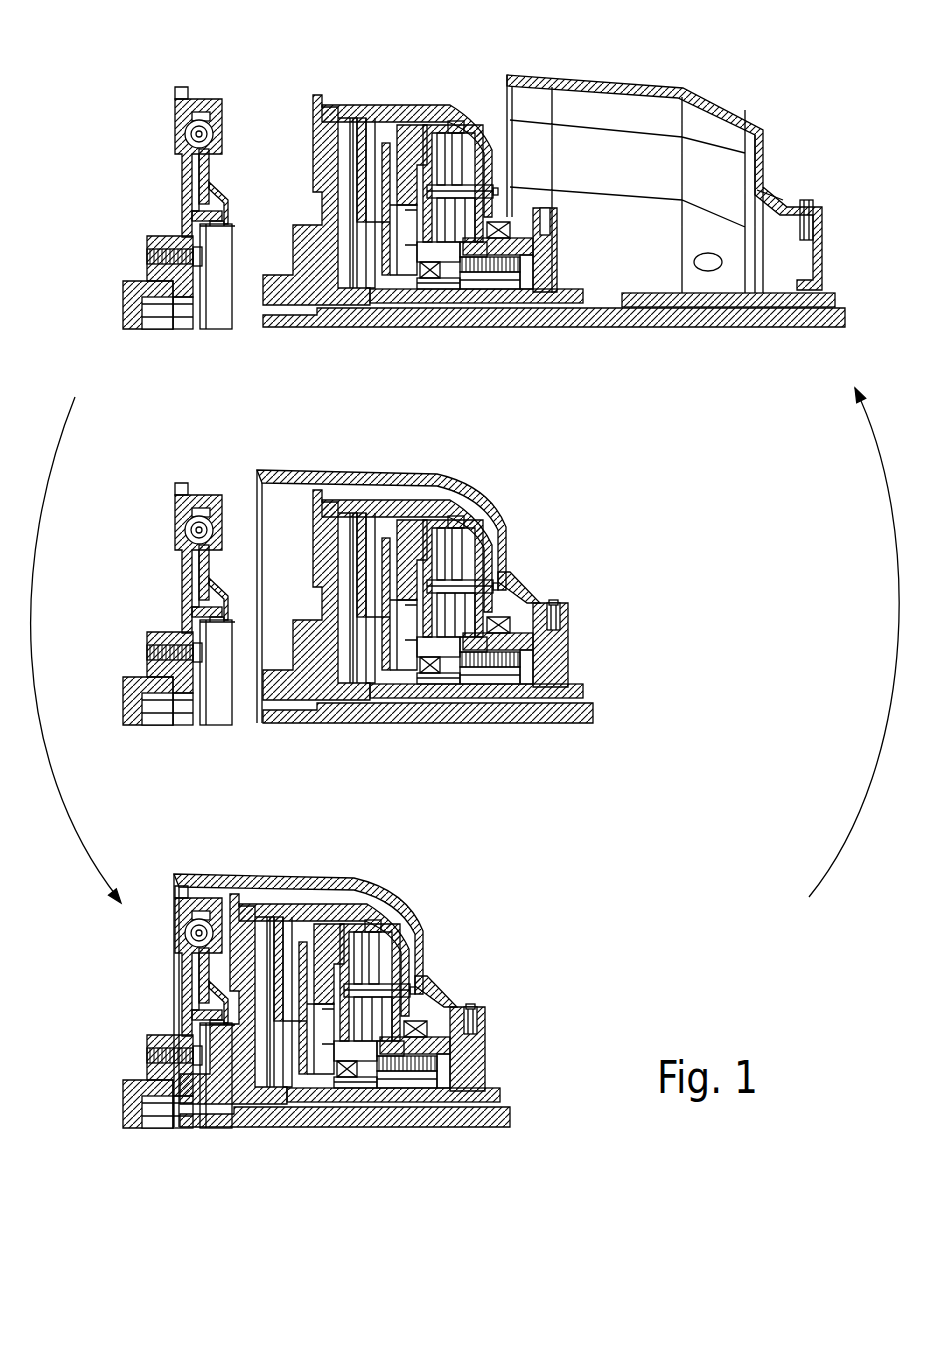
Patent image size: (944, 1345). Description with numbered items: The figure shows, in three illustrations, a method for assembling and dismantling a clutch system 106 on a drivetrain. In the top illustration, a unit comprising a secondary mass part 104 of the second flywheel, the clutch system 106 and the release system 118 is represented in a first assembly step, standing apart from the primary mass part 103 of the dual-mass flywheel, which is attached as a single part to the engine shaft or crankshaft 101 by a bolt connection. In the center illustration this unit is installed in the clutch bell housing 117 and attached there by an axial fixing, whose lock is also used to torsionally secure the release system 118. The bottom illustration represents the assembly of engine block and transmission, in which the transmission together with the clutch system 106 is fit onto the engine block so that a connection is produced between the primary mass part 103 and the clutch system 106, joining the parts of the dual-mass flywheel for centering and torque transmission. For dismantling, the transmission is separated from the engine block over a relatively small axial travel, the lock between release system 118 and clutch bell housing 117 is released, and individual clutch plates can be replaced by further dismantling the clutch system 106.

The engine shaft or crankshaft 101 is at (136, 1176).
The primary mass part 103 is at (183, 971).
The secondary mass part 104 is at (247, 907).
The clutch system 106 is at (222, 1094).
The clutch bell housing 117 is at (439, 992).
The release system 118 is at (409, 1094).